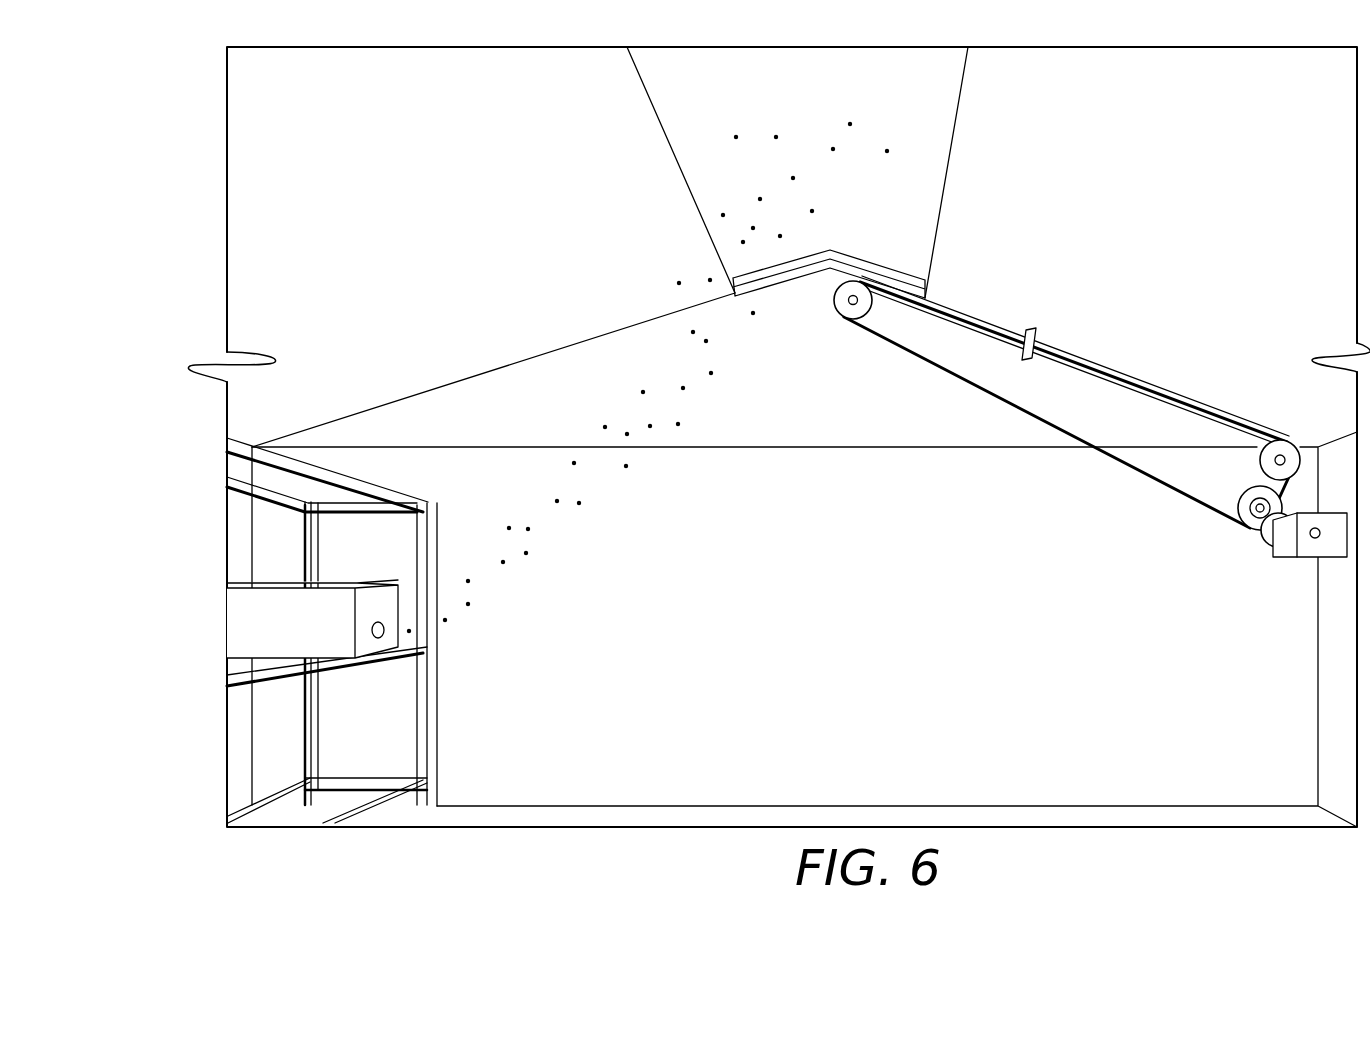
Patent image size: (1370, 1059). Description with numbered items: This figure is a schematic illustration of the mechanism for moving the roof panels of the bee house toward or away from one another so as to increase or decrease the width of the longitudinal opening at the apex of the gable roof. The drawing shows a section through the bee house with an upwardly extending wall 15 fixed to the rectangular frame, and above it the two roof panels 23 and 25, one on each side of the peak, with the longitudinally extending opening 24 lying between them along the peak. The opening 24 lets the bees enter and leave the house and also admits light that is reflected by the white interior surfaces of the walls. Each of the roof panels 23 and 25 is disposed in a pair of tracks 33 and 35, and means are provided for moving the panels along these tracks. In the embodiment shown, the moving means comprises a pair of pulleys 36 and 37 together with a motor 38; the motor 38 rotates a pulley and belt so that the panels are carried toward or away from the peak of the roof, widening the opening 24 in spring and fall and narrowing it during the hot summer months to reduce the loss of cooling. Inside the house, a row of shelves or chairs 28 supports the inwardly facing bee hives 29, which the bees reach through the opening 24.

The wall 15 is at (1040, 530).
The roof panel 23 is at (523, 215).
The longitudinally extending opening 24 is at (833, 117).
The roof panel 25 is at (1147, 220).
The chairs 28 is at (465, 667).
The bee hive 29 is at (311, 639).
The track 33 is at (777, 281).
The track 35 is at (887, 290).
The pulley 36 is at (858, 302).
The pulley 37 is at (1280, 452).
The motor 38 is at (1306, 557).